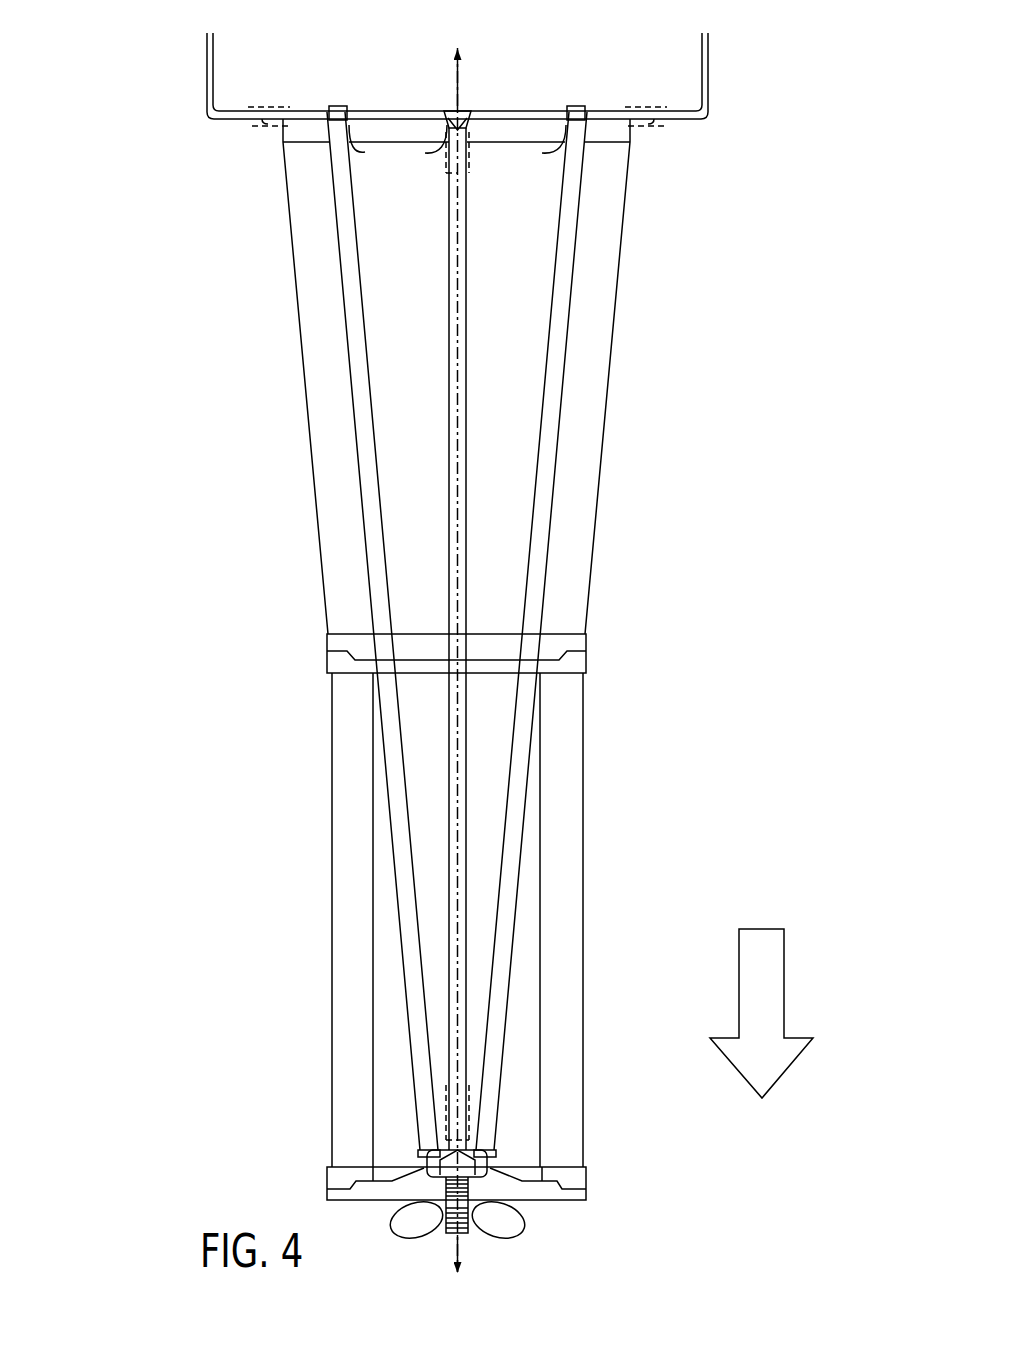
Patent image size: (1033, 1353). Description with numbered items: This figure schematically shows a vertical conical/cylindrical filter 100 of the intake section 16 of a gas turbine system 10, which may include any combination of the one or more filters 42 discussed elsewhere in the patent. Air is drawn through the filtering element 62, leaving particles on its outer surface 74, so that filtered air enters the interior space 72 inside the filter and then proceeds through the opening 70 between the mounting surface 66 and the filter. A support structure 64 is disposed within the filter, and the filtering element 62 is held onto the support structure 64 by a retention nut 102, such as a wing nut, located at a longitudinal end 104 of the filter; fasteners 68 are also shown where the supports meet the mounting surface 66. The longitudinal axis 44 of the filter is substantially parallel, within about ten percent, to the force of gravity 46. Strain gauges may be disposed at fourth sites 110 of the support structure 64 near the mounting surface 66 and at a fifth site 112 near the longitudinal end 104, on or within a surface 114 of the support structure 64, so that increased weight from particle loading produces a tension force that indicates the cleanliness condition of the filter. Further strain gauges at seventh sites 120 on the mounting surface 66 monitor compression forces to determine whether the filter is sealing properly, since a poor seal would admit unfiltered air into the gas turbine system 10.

The gas turbine system 10 is at (200, 194).
The intake section 16 is at (265, 255).
The filters 42 is at (210, 285).
The vertical conical/cylindrical filter 100 is at (510, 643).
The longitudinal axis 44 is at (459, 1243).
The force of gravity 46 is at (784, 983).
The filtering element 62 is at (631, 427).
The support structure 64 is at (533, 815).
The mounting surface 66 is at (709, 68).
The fasteners 68 is at (327, 110).
The opening 70 is at (514, 86).
The interior space 72 is at (498, 572).
The outer surface 74 is at (597, 490).
The retention nut 102 is at (528, 1228).
The longitudinal end 104 is at (588, 1212).
The fourth sites 110 is at (352, 140).
The fifth site 112 is at (468, 1116).
The surface of the support structure 114 is at (463, 244).
The seventh sites 120 is at (265, 122).